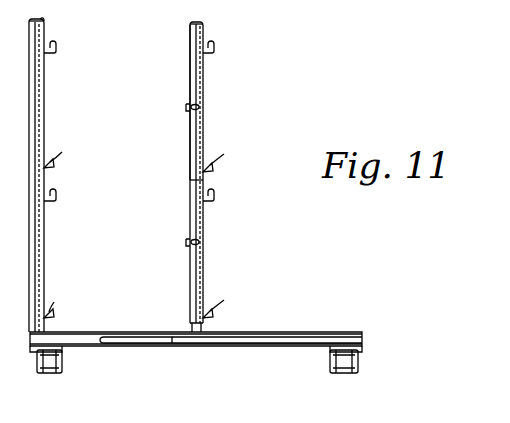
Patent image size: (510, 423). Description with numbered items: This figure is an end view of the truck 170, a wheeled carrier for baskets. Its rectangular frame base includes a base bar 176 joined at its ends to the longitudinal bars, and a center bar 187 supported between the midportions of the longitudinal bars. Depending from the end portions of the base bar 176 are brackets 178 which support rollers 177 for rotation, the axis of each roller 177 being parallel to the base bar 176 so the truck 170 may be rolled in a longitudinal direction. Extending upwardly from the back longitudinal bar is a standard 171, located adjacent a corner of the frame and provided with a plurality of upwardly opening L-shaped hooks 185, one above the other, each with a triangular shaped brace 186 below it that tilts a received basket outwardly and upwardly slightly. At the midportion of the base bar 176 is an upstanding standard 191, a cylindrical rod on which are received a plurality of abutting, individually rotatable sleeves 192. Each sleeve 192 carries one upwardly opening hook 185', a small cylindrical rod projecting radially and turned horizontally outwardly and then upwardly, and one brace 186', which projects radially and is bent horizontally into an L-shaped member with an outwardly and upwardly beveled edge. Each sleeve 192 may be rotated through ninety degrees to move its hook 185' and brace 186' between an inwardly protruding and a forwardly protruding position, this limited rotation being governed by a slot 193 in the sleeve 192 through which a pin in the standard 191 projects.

The truck 170 is at (203, 270).
The standard 171 is at (44, 88).
The base bar 176 is at (262, 333).
The roller 177 is at (58, 372).
The bracket 178 is at (62, 352).
The L-shaped hook 185 is at (71, 110).
The hook 185' is at (232, 110).
The brace 186 is at (69, 226).
The brace 186' is at (231, 228).
The center bar 187 is at (132, 337).
The standard 191 is at (203, 80).
The sleeve 192 is at (199, 106).
The slot 193 is at (188, 109).